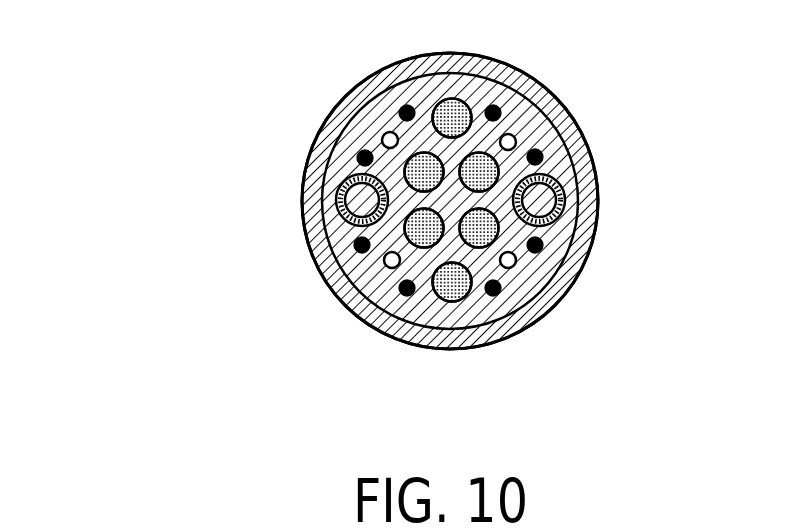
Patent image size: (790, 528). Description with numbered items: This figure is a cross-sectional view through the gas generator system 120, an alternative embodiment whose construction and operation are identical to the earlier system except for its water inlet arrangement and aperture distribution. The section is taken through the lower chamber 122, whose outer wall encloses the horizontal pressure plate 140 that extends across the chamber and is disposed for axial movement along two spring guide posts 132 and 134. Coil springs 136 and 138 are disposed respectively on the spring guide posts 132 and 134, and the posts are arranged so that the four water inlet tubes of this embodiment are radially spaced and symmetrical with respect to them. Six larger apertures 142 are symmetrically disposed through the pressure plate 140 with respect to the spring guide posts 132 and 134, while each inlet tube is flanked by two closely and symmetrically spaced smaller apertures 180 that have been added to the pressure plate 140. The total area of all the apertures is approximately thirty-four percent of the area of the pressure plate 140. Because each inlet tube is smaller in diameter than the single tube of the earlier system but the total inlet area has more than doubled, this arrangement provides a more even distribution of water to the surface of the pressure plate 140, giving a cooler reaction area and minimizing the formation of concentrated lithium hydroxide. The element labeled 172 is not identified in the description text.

The gas generator system 120 is at (170, 256).
The lower chamber 122 is at (322, 145).
The spring guide post 132 is at (332, 204).
The spring guide post 134 is at (568, 182).
The coil spring 136 is at (318, 243).
The coil spring 138 is at (566, 212).
The pressure plate 140 is at (518, 287).
The aperture 142 is at (500, 159).
The insulated conductor 172 is at (456, 100).
The aperture 180 is at (512, 105).